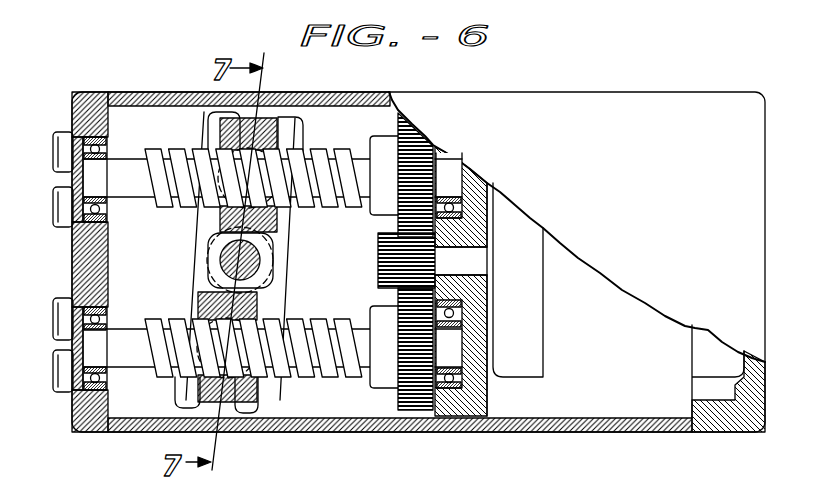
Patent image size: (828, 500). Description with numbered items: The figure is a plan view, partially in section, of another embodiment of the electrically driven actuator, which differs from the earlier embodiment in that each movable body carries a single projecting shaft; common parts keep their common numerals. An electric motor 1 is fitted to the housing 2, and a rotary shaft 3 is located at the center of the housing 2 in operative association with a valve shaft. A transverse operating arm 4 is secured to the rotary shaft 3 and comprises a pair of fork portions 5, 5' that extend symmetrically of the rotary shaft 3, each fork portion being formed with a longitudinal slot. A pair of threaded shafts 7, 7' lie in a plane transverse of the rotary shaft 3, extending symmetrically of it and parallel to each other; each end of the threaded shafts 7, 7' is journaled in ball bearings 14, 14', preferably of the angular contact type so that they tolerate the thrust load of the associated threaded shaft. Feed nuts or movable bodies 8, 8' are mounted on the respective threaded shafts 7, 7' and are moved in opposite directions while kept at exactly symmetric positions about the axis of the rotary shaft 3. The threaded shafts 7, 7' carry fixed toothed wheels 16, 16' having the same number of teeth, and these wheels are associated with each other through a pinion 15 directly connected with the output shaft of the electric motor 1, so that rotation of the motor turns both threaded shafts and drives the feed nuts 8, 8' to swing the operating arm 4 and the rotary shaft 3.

The electric motor 1 is at (618, 316).
The housing 2 is at (366, 100).
The rotary shaft 3 is at (218, 262).
The operating arm 4 is at (285, 240).
The fork portion 5 is at (231, 132).
The fork portion 5' is at (196, 396).
The threaded shaft 7 is at (241, 161).
The threaded shaft 7' is at (241, 361).
The feed nut 8 is at (264, 147).
The feed nut 8' is at (237, 380).
The ball bearing 14 is at (274, 197).
The ball bearing 14' is at (272, 353).
The pinion 15 is at (377, 262).
The toothed wheel 16 is at (393, 173).
The toothed wheel 16' is at (415, 374).